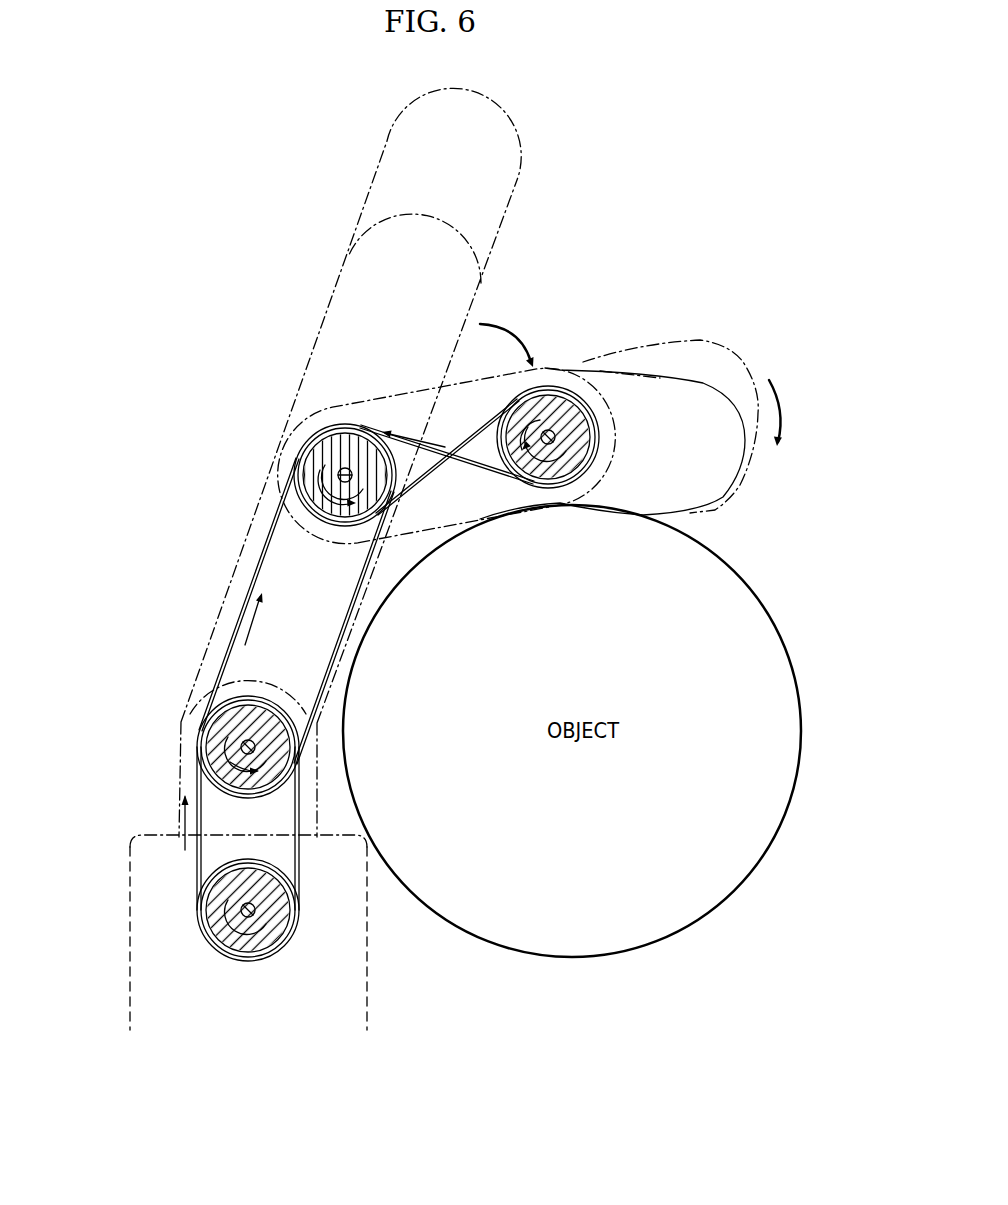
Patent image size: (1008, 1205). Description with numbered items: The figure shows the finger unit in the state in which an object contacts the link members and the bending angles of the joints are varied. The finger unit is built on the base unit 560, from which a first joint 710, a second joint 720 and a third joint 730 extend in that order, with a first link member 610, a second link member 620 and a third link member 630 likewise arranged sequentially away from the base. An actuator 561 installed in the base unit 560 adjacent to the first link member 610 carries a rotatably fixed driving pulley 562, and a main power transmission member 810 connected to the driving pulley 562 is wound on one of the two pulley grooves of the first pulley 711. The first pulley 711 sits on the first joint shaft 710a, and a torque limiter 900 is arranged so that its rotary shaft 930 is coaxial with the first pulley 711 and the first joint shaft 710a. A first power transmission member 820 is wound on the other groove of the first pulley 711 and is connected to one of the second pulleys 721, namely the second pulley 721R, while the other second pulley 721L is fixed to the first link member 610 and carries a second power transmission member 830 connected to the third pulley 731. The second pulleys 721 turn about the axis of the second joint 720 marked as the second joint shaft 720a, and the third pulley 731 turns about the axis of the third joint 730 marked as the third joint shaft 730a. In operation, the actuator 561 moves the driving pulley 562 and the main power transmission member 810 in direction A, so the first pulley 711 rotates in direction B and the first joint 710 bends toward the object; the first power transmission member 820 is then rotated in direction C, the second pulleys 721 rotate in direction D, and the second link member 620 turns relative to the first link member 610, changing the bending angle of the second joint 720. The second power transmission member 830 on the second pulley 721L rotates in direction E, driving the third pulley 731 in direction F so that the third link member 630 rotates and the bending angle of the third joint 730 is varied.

The base unit 560 is at (130, 1000).
The actuator 561 is at (182, 954).
The driving pulley 562 is at (248, 958).
The first link member 610 is at (240, 558).
The second link member 620 is at (452, 383).
The third link member 630 is at (722, 475).
The first joint 710 is at (236, 628).
The first joint shaft 710a is at (167, 689).
The first pulley 711 is at (189, 711).
The second joint 720 is at (249, 438).
The rotation axis of second pulley unit 720a is at (345, 468).
The second pulleys 721 is at (249, 475).
The second pulley 721R is at (345, 475).
The second pulley 721L is at (318, 487).
The third joint 730 is at (590, 394).
The rotation axis of third pulley unit 730a is at (560, 436).
The third pulley 731 is at (588, 460).
The main power transmission member 810 is at (200, 868).
The first power transmission member 820 is at (245, 603).
The second power transmission member 830 is at (458, 450).
The torque limiter 900 is at (197, 733).
The rotary shaft 930 is at (248, 747).